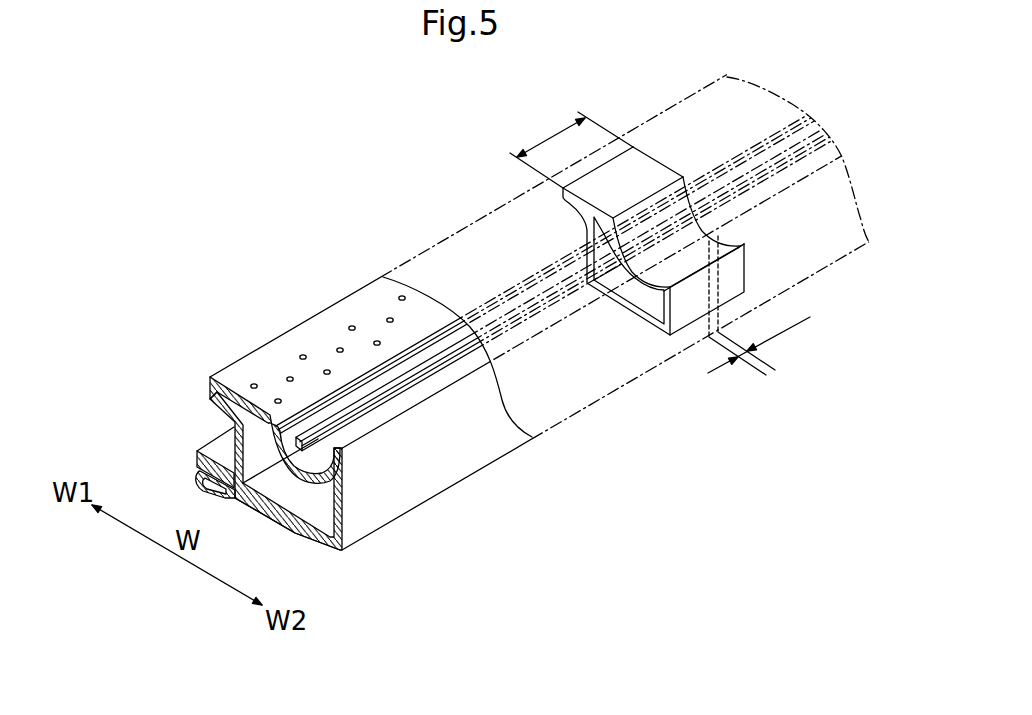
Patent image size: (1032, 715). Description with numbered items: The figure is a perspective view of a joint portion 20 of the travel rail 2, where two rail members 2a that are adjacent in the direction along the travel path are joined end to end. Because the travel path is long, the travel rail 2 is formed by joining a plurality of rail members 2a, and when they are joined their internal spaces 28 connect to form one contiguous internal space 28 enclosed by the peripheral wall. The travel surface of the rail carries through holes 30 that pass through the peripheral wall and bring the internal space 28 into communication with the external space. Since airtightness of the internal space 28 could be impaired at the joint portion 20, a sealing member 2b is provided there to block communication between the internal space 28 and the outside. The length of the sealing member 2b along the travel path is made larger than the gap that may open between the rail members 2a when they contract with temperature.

The travel rail 2 is at (545, 312).
The rail member 2a is at (478, 450).
The sealing member 2b is at (676, 322).
The joint portion 20 is at (561, 239).
The internal space 28 is at (314, 512).
The through holes 30 is at (352, 326).